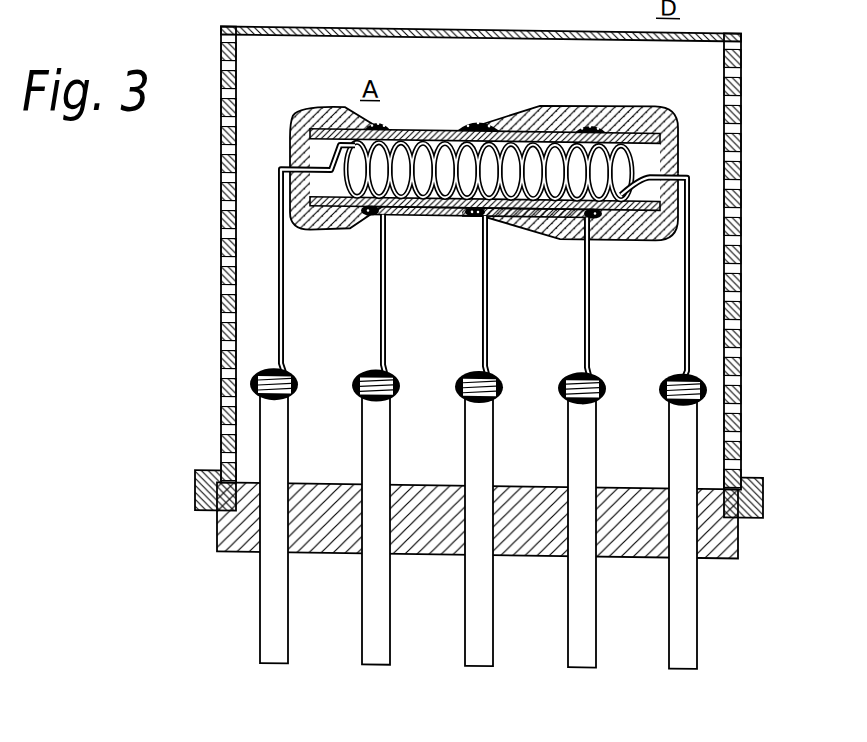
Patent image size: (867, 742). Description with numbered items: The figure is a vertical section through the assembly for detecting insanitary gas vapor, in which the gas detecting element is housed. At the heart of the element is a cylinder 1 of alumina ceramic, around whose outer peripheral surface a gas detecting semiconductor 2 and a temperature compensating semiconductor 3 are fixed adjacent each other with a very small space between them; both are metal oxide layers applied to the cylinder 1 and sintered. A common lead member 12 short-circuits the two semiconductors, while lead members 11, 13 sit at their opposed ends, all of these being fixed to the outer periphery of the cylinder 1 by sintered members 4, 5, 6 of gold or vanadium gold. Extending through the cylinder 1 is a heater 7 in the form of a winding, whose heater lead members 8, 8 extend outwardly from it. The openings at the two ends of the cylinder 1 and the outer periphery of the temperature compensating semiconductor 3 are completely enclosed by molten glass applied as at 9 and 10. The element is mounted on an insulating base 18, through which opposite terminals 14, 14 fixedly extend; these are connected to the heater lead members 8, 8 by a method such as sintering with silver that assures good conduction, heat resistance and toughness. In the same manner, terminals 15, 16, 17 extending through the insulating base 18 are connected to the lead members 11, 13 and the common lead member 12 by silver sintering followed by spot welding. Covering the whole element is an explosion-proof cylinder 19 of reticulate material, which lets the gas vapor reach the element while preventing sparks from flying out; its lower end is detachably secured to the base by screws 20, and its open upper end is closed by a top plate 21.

The cylinder 1 is at (427, 141).
The gas detecting semiconductor 2 is at (427, 213).
The temperature compensating semiconductor 3 is at (528, 234).
The sintered member 4 is at (375, 215).
The sintered member 5 is at (472, 215).
The sintered member 6 is at (602, 220).
The heater 7 is at (523, 142).
The heater lead member 8 is at (285, 297).
The molten glass 9 is at (630, 115).
The molten glass 10 is at (307, 127).
The lead member 11 is at (378, 325).
The common lead member 12 is at (480, 318).
The lead member 13 is at (583, 322).
The terminal 14 is at (280, 620).
The terminal 15 is at (387, 626).
The terminal 16 is at (493, 631).
The terminal 17 is at (590, 630).
The insulating base 18 is at (223, 549).
The explosion-proof cylinder 19 is at (220, 287).
The screw 20 is at (193, 491).
The top plate 21 is at (568, 31).